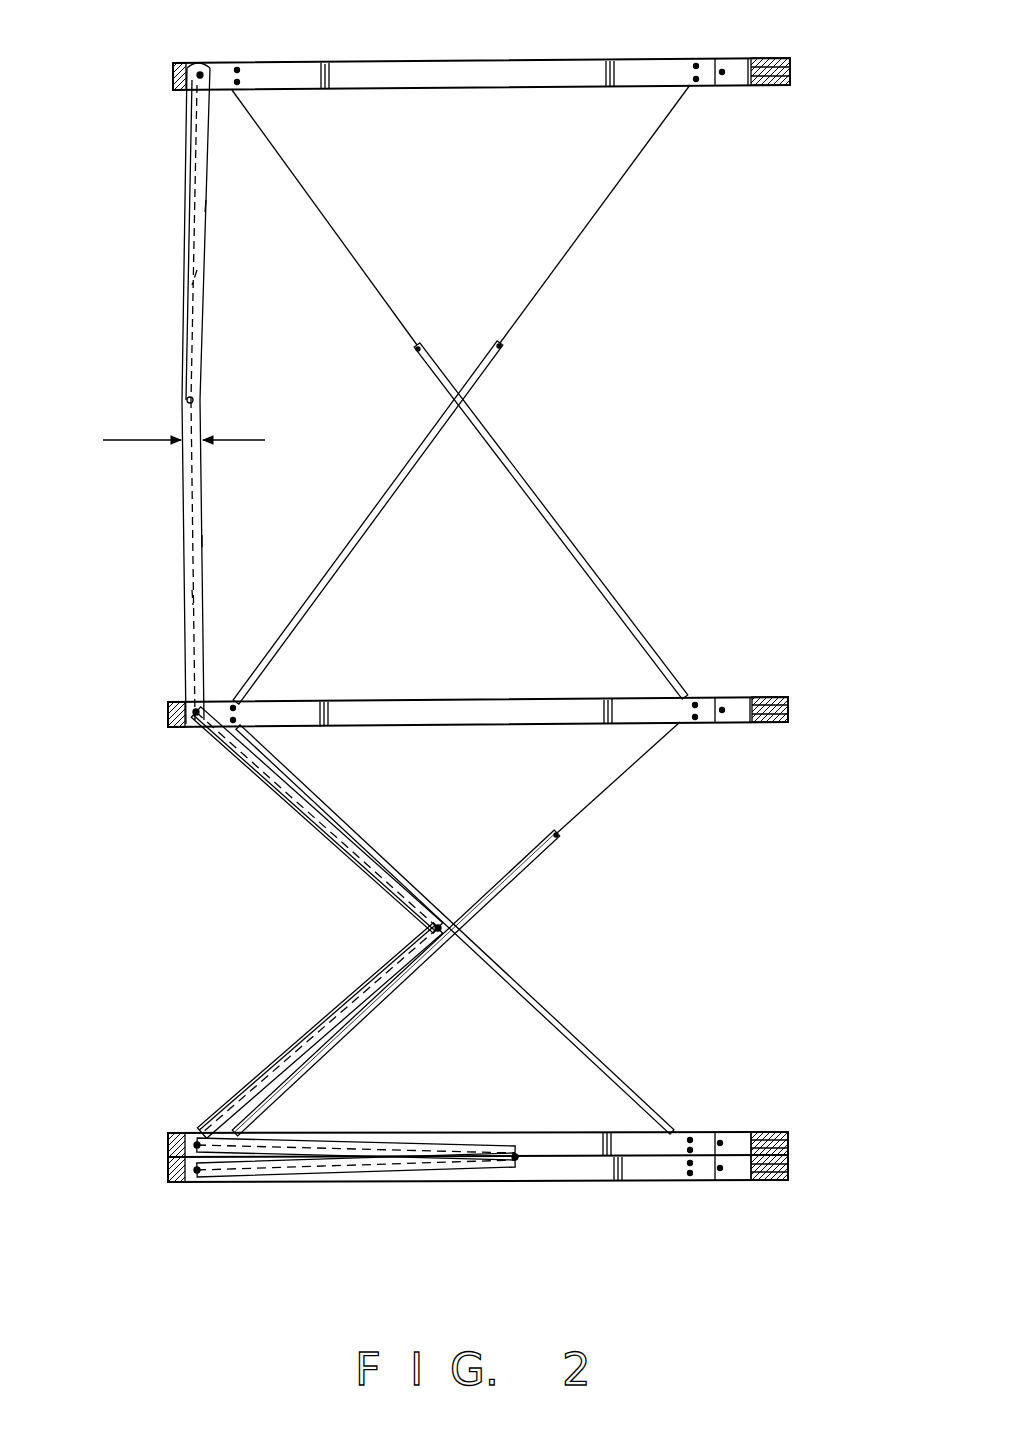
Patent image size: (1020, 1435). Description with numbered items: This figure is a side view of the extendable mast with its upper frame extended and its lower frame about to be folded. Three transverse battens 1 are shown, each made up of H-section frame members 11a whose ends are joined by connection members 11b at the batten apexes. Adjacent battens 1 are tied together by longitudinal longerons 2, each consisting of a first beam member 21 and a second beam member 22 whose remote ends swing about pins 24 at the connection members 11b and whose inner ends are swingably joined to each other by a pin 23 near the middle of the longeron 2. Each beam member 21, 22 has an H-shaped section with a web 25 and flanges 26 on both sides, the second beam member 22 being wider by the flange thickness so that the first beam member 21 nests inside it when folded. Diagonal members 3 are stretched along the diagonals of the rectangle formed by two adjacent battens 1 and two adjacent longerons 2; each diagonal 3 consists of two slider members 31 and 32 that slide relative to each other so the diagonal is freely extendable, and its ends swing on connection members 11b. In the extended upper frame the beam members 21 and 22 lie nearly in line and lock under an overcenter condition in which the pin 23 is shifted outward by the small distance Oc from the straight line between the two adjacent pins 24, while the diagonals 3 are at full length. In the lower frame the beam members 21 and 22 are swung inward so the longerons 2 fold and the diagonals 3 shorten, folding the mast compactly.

The batten 1 is at (802, 48).
The frame member 11a is at (790, 88).
The connection member 11b is at (172, 74).
The longeron 2 is at (276, 633).
The first beam member 21 is at (183, 206).
The second beam member 22 is at (183, 541).
The pin 23 is at (190, 397).
The pin 24 is at (200, 72).
The web 25 is at (198, 276).
The flange 26 is at (207, 206).
The diagonal member 3 is at (474, 610).
The slider member 31 is at (607, 186).
The slider member 32 is at (486, 383).
The overcenter distance Oc is at (205, 425).